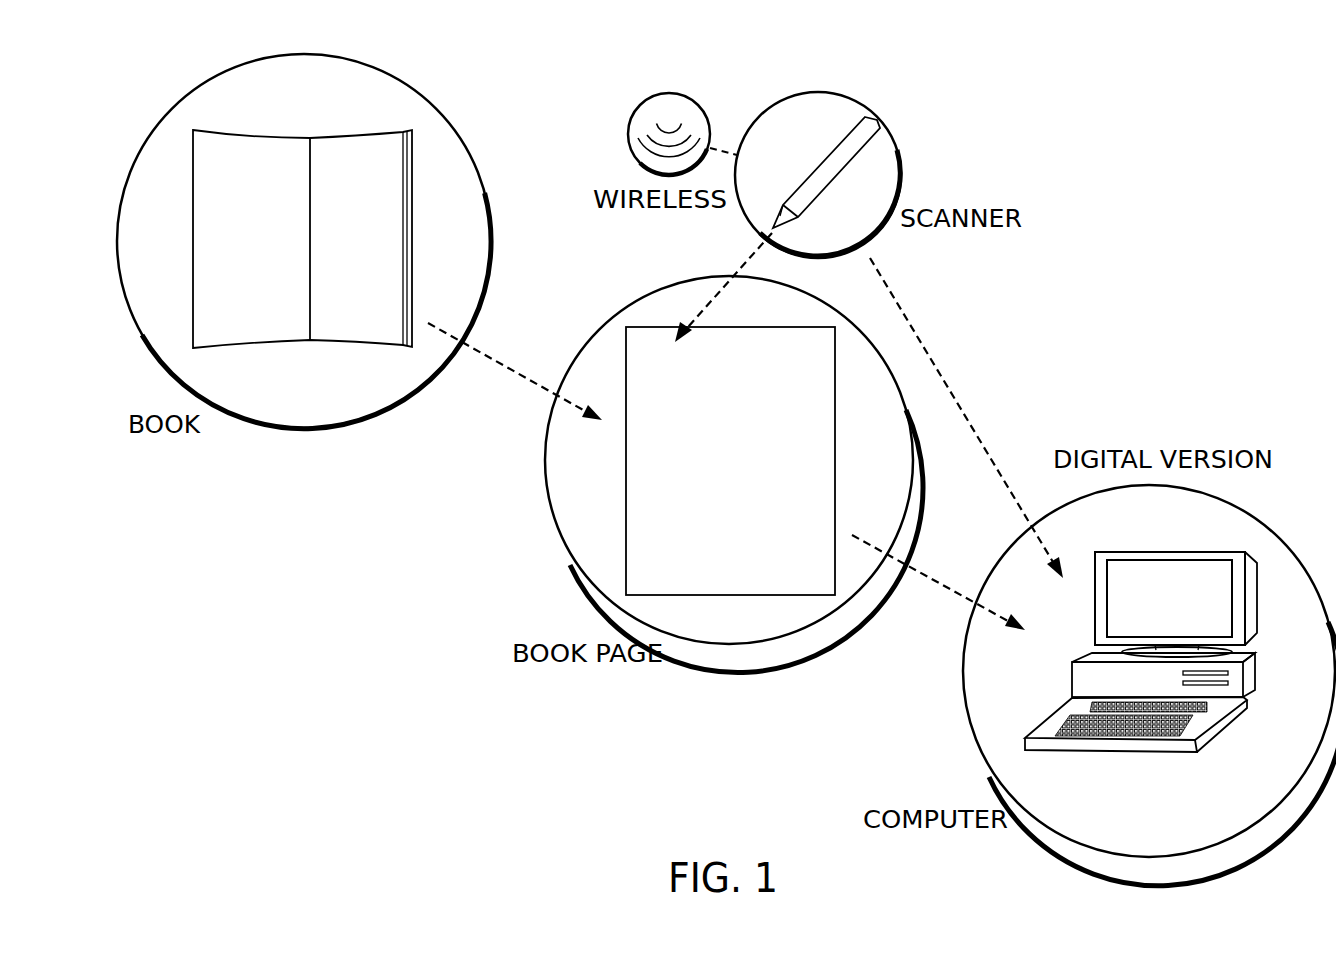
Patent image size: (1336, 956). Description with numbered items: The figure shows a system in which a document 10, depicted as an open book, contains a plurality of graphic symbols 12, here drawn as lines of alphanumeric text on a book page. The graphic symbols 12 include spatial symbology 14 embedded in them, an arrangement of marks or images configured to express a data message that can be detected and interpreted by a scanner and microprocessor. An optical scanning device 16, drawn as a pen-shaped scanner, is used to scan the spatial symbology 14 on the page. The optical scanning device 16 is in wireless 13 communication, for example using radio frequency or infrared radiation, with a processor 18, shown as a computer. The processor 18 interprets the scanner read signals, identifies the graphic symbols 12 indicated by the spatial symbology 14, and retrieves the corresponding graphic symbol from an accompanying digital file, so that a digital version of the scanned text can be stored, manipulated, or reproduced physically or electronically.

The document 10 is at (287, 135).
The graphic symbols 12 is at (662, 466).
The wireless communication 13 is at (660, 92).
The spatial symbology 14 is at (830, 467).
The optical scanning device 16 is at (862, 153).
The processor 18 is at (1250, 698).